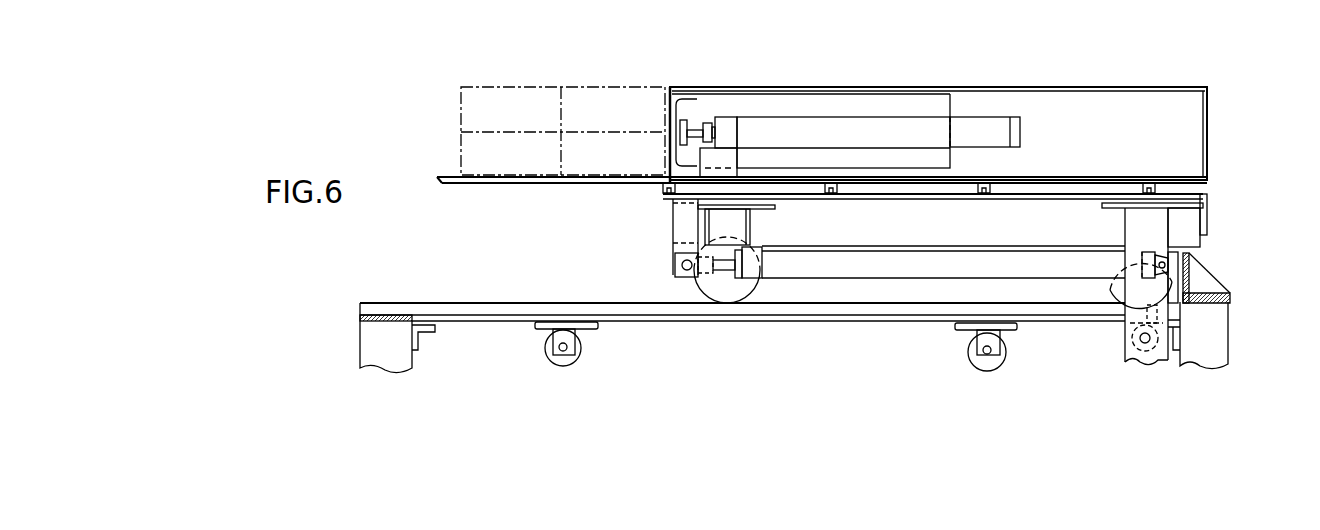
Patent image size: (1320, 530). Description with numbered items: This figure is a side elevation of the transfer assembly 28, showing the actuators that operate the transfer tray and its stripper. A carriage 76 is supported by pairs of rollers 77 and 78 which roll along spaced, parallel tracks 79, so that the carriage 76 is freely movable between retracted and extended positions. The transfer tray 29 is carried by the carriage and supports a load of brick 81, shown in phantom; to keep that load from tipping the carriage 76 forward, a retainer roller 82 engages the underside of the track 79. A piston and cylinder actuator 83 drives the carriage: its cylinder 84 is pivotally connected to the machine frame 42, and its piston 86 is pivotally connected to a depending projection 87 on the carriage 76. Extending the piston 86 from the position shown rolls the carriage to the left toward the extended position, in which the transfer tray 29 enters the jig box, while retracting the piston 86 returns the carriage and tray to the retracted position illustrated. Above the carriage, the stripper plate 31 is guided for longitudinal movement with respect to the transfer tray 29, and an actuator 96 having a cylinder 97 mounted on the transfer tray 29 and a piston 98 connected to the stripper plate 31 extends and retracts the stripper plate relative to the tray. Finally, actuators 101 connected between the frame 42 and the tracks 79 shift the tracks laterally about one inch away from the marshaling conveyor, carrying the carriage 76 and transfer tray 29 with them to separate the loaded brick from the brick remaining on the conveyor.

The transfer assembly 28 is at (684, 80).
The transfer tray 29 is at (557, 183).
The stripper plate 31 is at (670, 87).
The machine frame 42 is at (1225, 318).
The carriage 76 is at (932, 201).
The rollers 77 is at (755, 287).
The rollers 78 is at (1115, 288).
The tracks 79 is at (532, 303).
The load of brick 81 is at (545, 87).
The retainer roller 82 is at (1133, 338).
The piston and cylinder actuator 83 is at (974, 252).
The cylinder 84 is at (1027, 257).
The piston 86 is at (720, 303).
The depending projection 87 is at (683, 233).
The actuator 96 is at (986, 118).
The cylinder 97 is at (852, 125).
The piston 98 is at (697, 123).
The actuators 101 is at (545, 352).